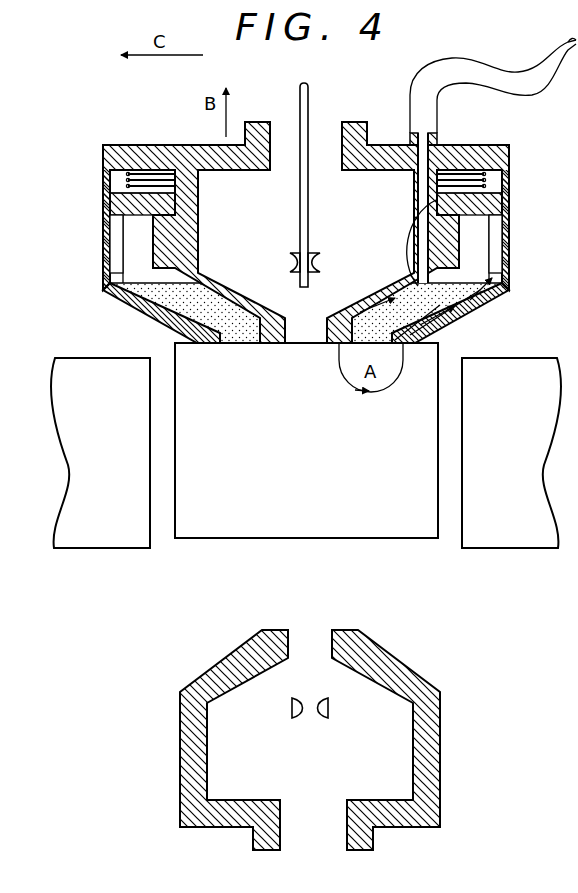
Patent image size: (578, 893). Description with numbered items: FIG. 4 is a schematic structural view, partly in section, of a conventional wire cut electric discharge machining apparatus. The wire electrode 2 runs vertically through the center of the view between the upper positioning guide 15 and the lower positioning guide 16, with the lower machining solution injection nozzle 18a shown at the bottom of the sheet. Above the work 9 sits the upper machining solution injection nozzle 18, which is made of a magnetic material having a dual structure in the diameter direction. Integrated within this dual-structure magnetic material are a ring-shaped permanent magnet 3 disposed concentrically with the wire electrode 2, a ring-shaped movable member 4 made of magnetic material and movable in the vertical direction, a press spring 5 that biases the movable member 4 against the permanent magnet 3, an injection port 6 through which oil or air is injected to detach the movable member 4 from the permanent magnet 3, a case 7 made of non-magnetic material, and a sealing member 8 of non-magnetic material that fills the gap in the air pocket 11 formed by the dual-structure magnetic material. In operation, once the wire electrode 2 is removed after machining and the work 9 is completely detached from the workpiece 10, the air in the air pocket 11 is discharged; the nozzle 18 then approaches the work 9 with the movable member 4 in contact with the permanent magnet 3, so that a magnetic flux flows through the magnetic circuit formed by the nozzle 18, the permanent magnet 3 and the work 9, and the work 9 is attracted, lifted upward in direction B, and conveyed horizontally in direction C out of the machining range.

The wire electrode 2 is at (309, 110).
The permanent magnet 3 is at (110, 262).
The movable member 4 is at (115, 205).
The press spring 5 is at (126, 177).
The injection port 6 is at (432, 140).
The case 7 is at (106, 230).
The sealing member 8 is at (170, 300).
The work 9 is at (370, 540).
The workpiece 10 is at (102, 550).
The air pocket 11 is at (128, 292).
The upper positioning guide 15 is at (320, 260).
The lower positioning guide 16 is at (326, 712).
The upper machining solution injection nozzle 18 is at (115, 142).
The lower machining solution injection nozzle 18a is at (180, 732).